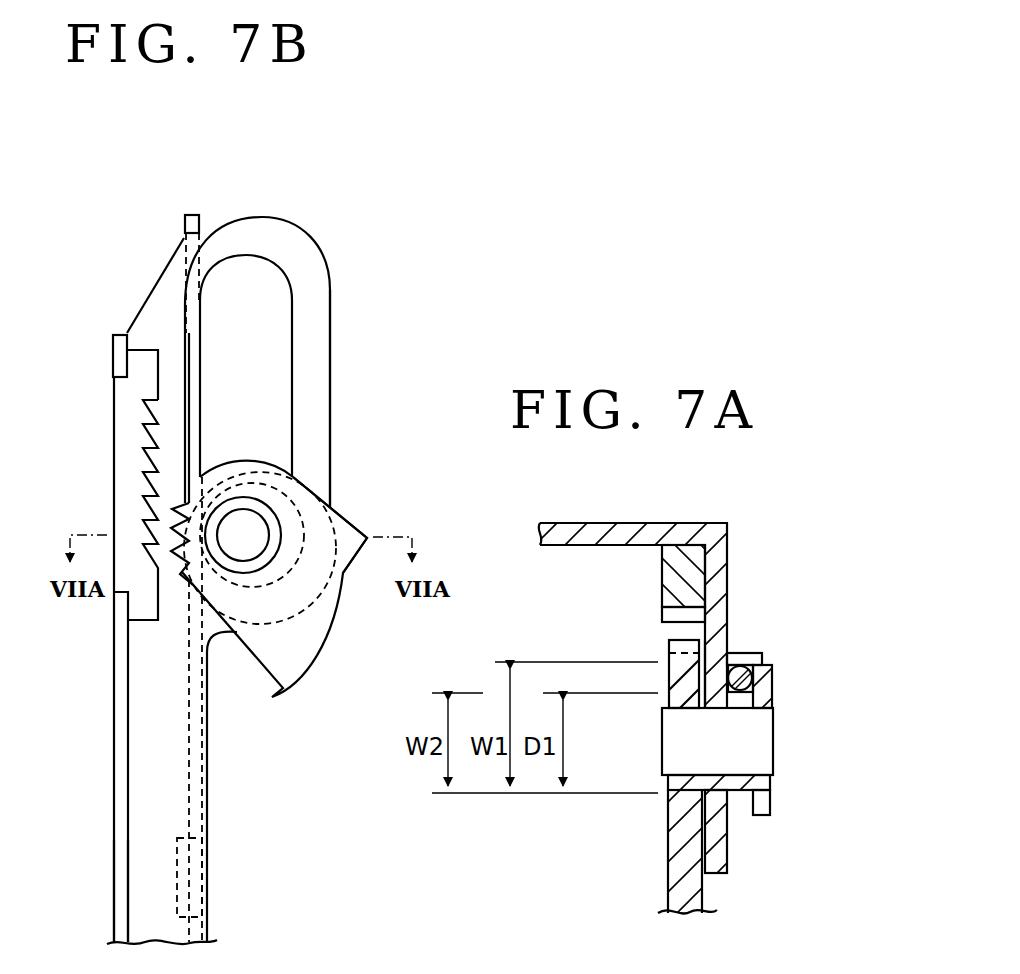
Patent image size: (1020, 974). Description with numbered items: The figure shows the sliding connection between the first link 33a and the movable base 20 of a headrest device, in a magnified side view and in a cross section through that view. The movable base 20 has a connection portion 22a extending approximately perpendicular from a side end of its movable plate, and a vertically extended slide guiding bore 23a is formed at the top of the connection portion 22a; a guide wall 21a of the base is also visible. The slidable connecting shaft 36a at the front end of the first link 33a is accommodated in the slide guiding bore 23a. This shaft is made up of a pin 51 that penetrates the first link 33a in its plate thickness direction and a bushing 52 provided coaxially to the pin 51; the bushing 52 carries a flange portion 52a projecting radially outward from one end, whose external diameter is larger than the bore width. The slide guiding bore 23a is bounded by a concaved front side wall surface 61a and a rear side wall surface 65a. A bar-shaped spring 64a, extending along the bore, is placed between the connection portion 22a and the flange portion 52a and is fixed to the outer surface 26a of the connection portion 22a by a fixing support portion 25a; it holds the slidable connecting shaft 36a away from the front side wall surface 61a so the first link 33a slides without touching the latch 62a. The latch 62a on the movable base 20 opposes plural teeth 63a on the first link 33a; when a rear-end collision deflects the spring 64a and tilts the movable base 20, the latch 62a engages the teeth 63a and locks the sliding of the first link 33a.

In FIG. 7B, the movable base 20 is at (166, 250).
In FIG. 7B, the guide wall 21a is at (117, 838).
In FIG. 7A, the connection portion 22a is at (718, 572).
In FIG. 7B, the slide guiding bore 23a is at (262, 264).
In FIG. 7A, the slide guiding bore 23a is at (713, 682).
In FIG. 7B, the fixing support portion 25a is at (177, 875).
In FIG. 7A, the fixing support portion 25a is at (762, 658).
In FIG. 7A, the outer surface 26a is at (727, 863).
In FIG. 7B, the first link 33a is at (343, 521).
In FIG. 7A, the first link 33a is at (668, 877).
In FIG. 7B, the slidable connecting shaft 36a is at (273, 507).
In FIG. 7A, the slidable connecting shaft 36a is at (773, 762).
In FIG. 7B, the pin 51 is at (250, 550).
In FIG. 7A, the pin 51 is at (768, 727).
In FIG. 7B, the bushing 52 is at (218, 477).
In FIG. 7A, the bushing 52 is at (760, 700).
In FIG. 7B, the flange portion 52a is at (267, 482).
In FIG. 7B, the front side wall surface 61a is at (189, 387).
In FIG. 7A, the front side wall surface 61a is at (727, 655).
In FIG. 7B, the latch 62a is at (113, 389).
In FIG. 7A, the latch 62a is at (680, 586).
In FIG. 7B, the teeth 63a is at (180, 560).
In FIG. 7A, the teeth 63a is at (669, 643).
In FIG. 7B, the spring 64a is at (207, 214).
In FIG. 7A, the spring 64a is at (717, 739).
In FIG. 7B, the rear side wall surface 65a is at (292, 393).
In FIG. 7A, the rear side wall surface 65a is at (668, 782).